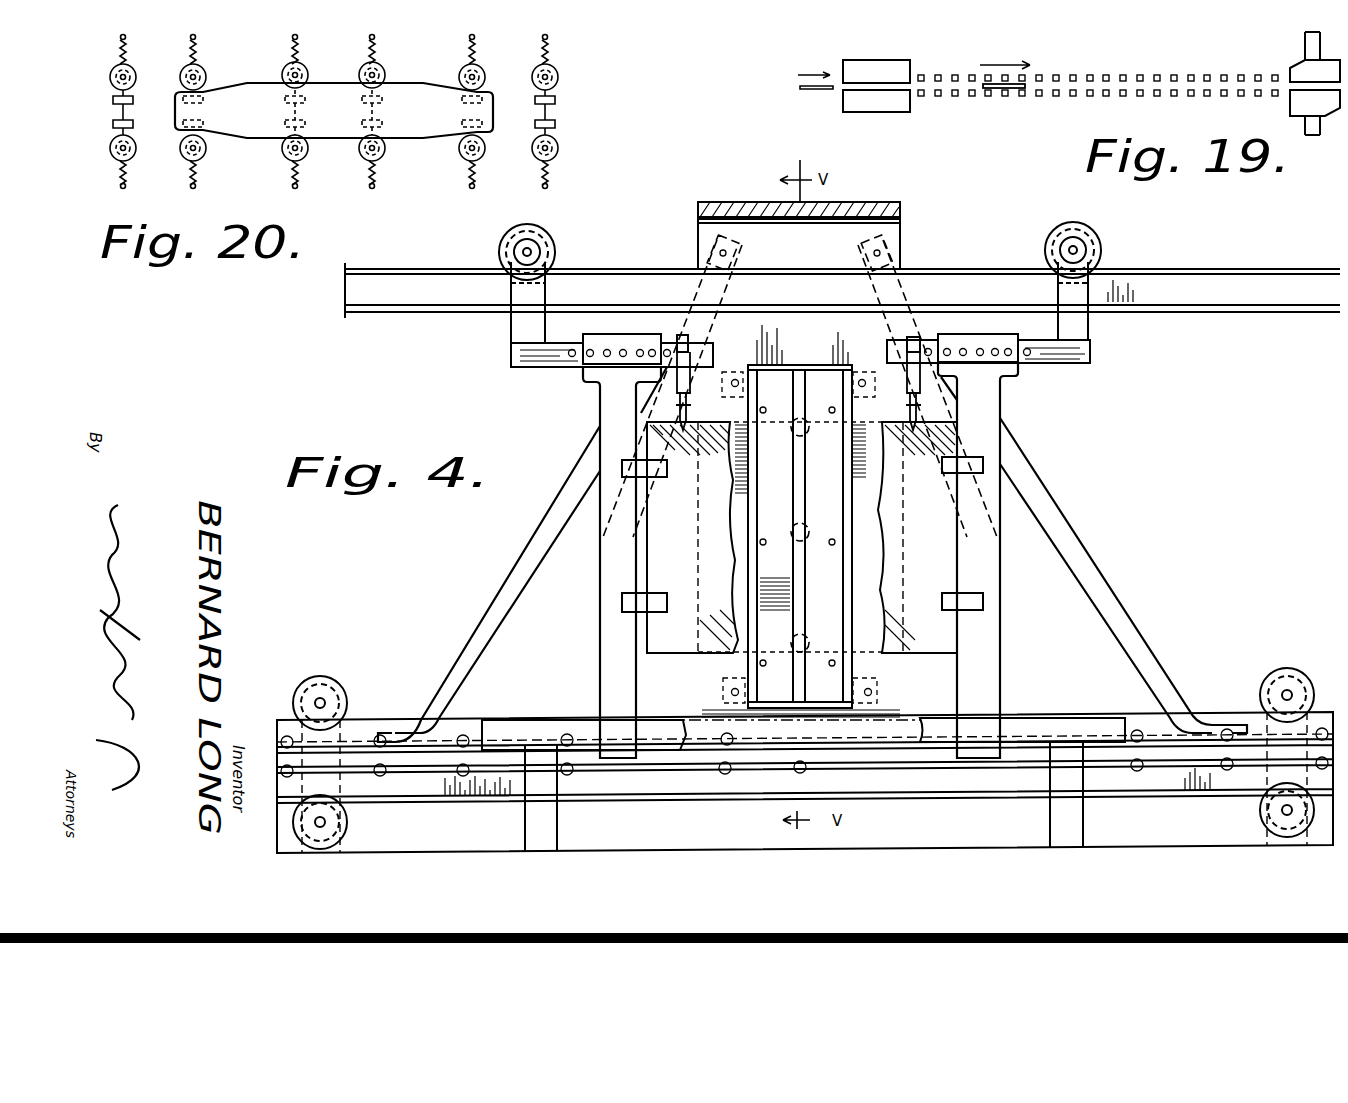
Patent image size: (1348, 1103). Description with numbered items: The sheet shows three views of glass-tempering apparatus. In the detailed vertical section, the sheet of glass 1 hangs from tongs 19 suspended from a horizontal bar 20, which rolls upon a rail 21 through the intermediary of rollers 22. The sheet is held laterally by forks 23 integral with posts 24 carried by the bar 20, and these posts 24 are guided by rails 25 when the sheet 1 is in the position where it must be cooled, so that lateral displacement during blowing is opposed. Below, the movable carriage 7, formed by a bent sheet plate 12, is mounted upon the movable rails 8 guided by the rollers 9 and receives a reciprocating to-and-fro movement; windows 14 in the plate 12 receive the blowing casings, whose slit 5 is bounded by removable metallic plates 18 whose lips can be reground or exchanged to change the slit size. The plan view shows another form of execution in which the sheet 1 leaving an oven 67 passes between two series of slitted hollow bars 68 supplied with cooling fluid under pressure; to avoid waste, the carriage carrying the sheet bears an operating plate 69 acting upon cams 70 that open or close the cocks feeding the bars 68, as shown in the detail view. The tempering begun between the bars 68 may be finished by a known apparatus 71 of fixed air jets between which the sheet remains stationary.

In FIG. 4, the sheet of glass 1 is at (802, 537).
In FIG. 19, the sheet of glass 1 is at (1007, 90).
In FIG. 4, the slit 5 is at (805, 470).
In FIG. 4, the movable carriage 7 is at (770, 725).
In FIG. 4, the movable rails 8 is at (1206, 768).
In FIG. 4, the rollers 9 is at (340, 703).
In FIG. 4, the bent sheet plate 12 is at (799, 236).
In FIG. 4, the windows 14 is at (753, 508).
In FIG. 4, the metallic plates 18 is at (790, 536).
In FIG. 4, the tongs 19 is at (679, 407).
In FIG. 4, the horizontal bar 20 is at (512, 357).
In FIG. 4, the rail 21 is at (626, 277).
In FIG. 4, the rollers 22 is at (550, 250).
In FIG. 4, the forks 23 is at (655, 594).
In FIG. 4, the posts 24 is at (606, 557).
In FIG. 4, the rails 25 is at (560, 725).
In FIG. 19, the oven 67 is at (876, 86).
In FIG. 20, the hollow bars 68 is at (128, 104).
In FIG. 19, the hollow bars 68 is at (1060, 80).
In FIG. 20, the operating plate 69 is at (334, 110).
In FIG. 20, the cams 70 is at (210, 78).
In FIG. 19, the apparatus 71 is at (1312, 97).